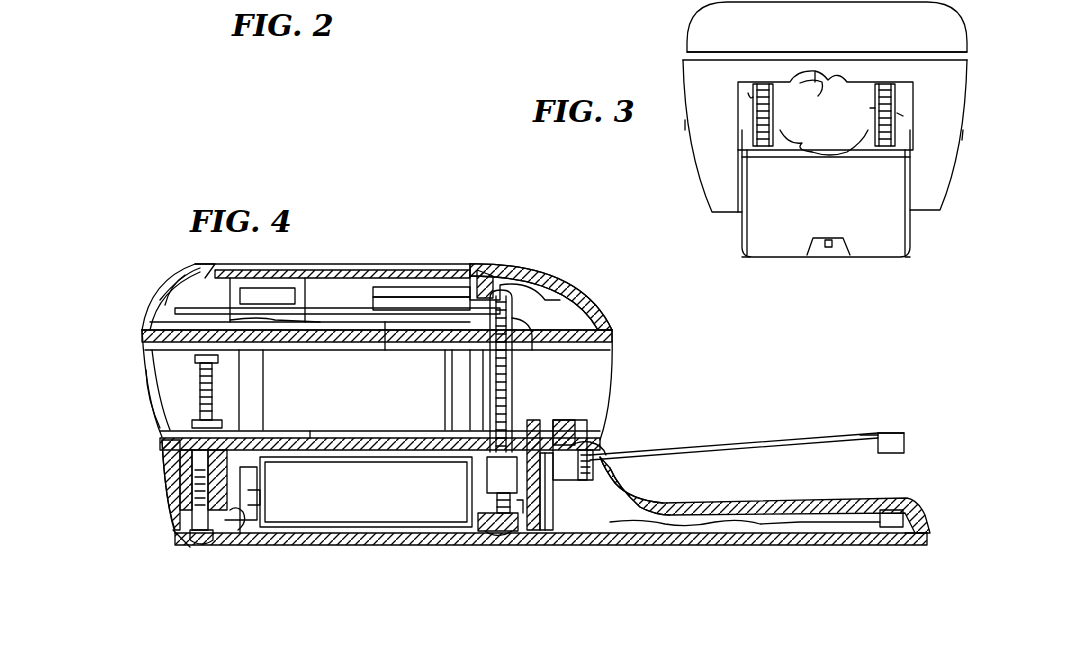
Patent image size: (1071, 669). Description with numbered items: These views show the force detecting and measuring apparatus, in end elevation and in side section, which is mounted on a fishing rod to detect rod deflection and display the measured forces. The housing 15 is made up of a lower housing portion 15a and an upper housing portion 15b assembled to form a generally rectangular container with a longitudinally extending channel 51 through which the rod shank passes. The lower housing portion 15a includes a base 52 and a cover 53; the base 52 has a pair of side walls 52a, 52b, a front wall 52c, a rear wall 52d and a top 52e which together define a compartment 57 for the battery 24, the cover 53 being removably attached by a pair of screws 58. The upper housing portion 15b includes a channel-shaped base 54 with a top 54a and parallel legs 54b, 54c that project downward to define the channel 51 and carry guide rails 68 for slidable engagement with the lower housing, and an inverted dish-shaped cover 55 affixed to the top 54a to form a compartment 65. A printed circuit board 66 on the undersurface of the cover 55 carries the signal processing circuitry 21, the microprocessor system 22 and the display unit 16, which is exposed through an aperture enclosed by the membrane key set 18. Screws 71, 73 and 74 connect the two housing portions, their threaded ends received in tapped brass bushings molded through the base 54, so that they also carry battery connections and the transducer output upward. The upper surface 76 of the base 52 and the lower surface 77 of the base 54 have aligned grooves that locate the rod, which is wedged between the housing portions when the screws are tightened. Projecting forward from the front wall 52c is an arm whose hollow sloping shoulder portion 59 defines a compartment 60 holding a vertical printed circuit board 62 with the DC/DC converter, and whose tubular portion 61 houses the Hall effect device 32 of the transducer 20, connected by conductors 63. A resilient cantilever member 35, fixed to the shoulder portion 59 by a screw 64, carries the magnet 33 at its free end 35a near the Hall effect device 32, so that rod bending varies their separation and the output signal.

In FIG. 4, the housing 15 is at (560, 283).
In FIG. 3, the lower housing portion 15a is at (880, 230).
In FIG. 4, the lower housing portion 15a is at (170, 507).
In FIG. 4, the upper housing portion 15b is at (178, 292).
In FIG. 4, the display unit 16 is at (422, 275).
In FIG. 4, the key set 18 is at (297, 268).
In FIG. 4, the transducer 20 is at (923, 440).
In FIG. 4, the signal processing circuitry 21 is at (328, 285).
In FIG. 4, the microprocessor system 22 is at (440, 288).
In FIG. 4, the battery 24 is at (366, 492).
In FIG. 4, the Hall effect device 32 is at (897, 534).
In FIG. 4, the magnet 33 is at (887, 454).
In FIG. 4, the cantilever mounted member 35 is at (747, 446).
In FIG. 4, the free end of member 35a is at (875, 433).
In FIG. 3, the longitudinally extending channel 51 is at (843, 97).
In FIG. 3, the lower housing portion base 52 is at (740, 230).
In FIG. 4, the lower housing portion base 52 is at (408, 432).
In FIG. 3, the side wall 52a is at (743, 258).
In FIG. 3, the side wall 52b is at (910, 257).
In FIG. 4, the front wall 52c is at (523, 513).
In FIG. 4, the rear wall 52d is at (230, 547).
In FIG. 4, the top 52e is at (312, 408).
In FIG. 4, the cover 53 is at (342, 547).
In FIG. 3, the upper housing portion base 54 is at (685, 118).
In FIG. 4, the upper housing portion base 54 is at (146, 336).
In FIG. 3, the top 54a is at (876, 108).
In FIG. 3, the leg 54b is at (684, 150).
In FIG. 3, the leg 54c is at (950, 150).
In FIG. 4, the leg 54c is at (147, 385).
In FIG. 3, the cover 55 is at (688, 25).
In FIG. 4, the cover 55 is at (160, 310).
In FIG. 4, the compartment 57 is at (240, 530).
In FIG. 3, the screws 58 is at (833, 258).
In FIG. 4, the screws 58 is at (177, 552).
In FIG. 4, the sloping shoulder portion 59 is at (613, 480).
In FIG. 4, the compartment 60 is at (613, 467).
In FIG. 4, the tubular portion 61 is at (838, 500).
In FIG. 4, the printed circuit board 62 is at (560, 530).
In FIG. 4, the conductors 63 is at (723, 540).
In FIG. 4, the screw 64 is at (593, 447).
In FIG. 4, the compartment 65 is at (385, 322).
In FIG. 4, the printed circuit board 66 is at (330, 308).
In FIG. 3, the guide rails 68 is at (745, 88).
In FIG. 4, the guide rails 68 is at (258, 386).
In FIG. 3, the screw 71 is at (752, 97).
In FIG. 4, the screw 71 is at (515, 385).
In FIG. 3, the screw 73 is at (897, 115).
In FIG. 4, the screw 74 is at (206, 395).
In FIG. 3, the upper surface of lower housing base 76 is at (782, 132).
In FIG. 3, the lower surface of upper housing base 77 is at (800, 85).